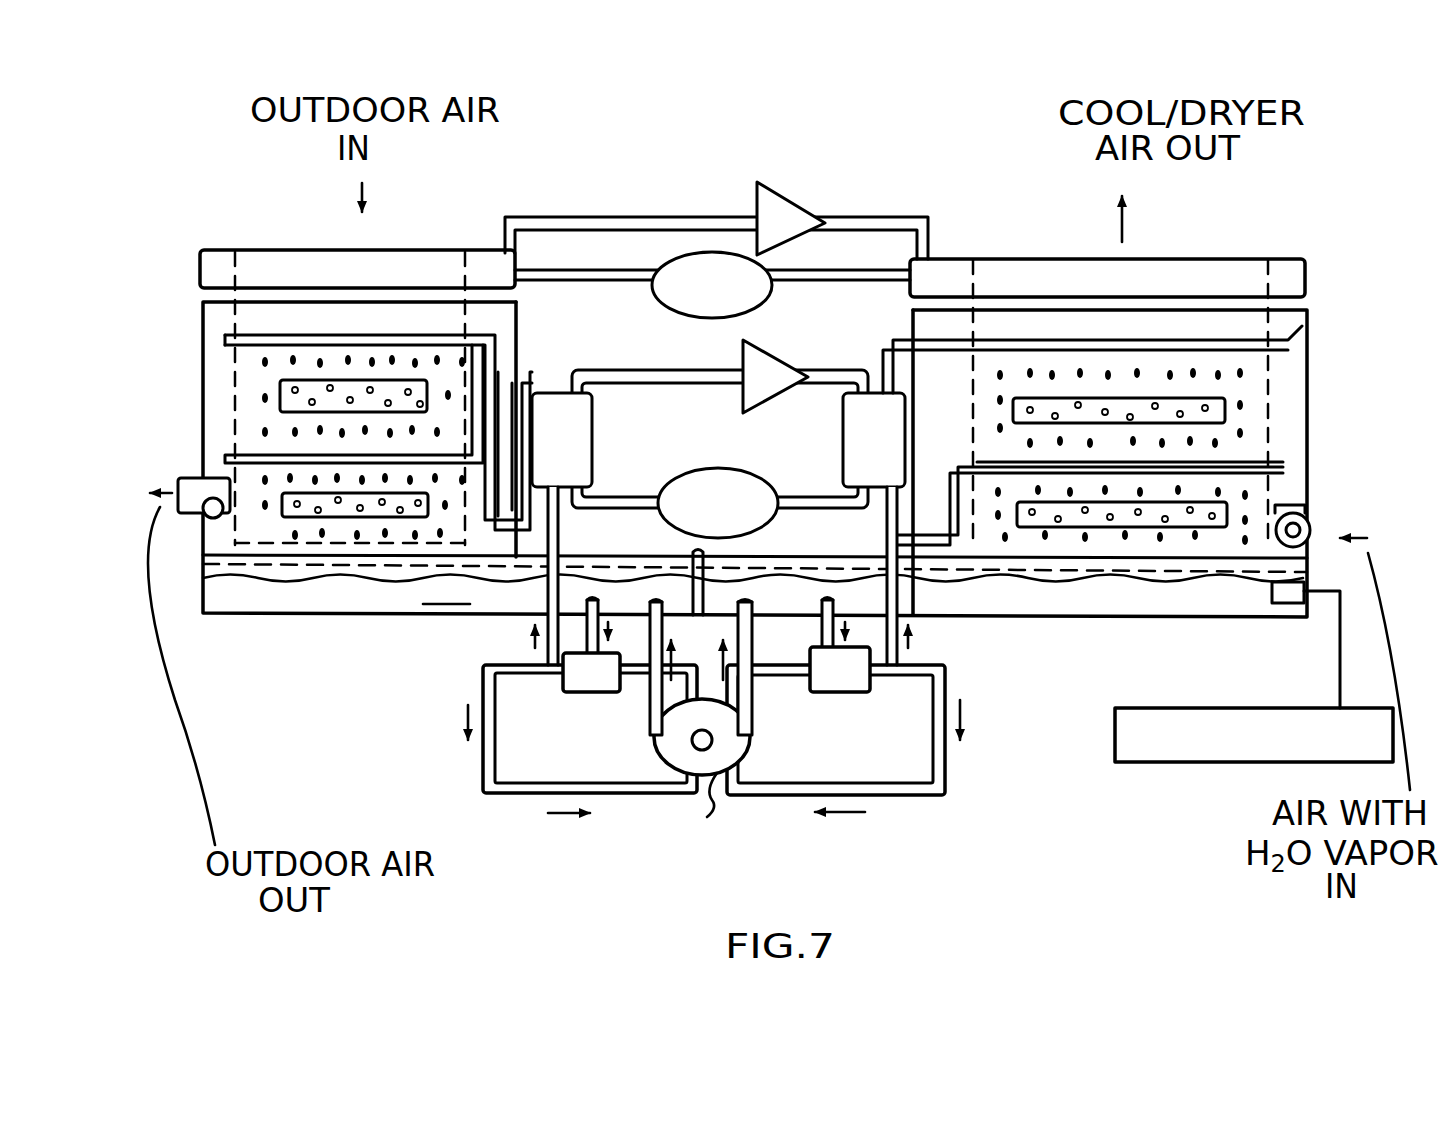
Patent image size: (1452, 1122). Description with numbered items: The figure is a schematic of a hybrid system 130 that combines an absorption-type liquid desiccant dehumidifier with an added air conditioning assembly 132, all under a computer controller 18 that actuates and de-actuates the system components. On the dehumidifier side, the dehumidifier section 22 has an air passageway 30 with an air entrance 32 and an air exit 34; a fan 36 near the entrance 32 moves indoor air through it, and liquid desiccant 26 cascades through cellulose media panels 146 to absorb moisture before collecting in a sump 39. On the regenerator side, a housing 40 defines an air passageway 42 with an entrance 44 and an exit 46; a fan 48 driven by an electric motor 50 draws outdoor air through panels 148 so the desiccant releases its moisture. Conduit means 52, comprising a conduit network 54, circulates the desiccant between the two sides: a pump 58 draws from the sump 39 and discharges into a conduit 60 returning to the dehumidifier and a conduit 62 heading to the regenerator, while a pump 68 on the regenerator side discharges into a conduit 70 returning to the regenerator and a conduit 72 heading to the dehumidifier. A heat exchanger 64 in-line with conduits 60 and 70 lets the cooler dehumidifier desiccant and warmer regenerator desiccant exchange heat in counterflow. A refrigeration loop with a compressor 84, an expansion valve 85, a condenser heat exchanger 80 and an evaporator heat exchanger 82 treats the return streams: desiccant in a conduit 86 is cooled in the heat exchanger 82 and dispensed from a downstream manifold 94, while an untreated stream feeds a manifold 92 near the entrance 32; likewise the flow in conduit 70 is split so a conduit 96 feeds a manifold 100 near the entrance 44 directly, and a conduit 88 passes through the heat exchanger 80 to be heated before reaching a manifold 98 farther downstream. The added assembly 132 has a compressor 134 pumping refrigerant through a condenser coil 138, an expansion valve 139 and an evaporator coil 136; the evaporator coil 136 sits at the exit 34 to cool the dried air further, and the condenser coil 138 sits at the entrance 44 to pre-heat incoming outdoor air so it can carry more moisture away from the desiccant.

The computer controller 18 is at (1232, 765).
The dehumidifier section 22 is at (1305, 360).
The liquid desiccant 26 is at (1105, 597).
The air passageway 30 is at (1265, 393).
The air entrance 32 is at (1308, 512).
The air exit 34 is at (913, 312).
The fan 36 is at (1288, 546).
The collection sump 39 is at (1185, 598).
The housing 40 is at (240, 326).
The air passageway 42 is at (248, 388).
The air entrance 44 is at (462, 320).
The air exit 46 is at (178, 490).
The fan 48 is at (192, 520).
The electric motor 50 is at (185, 515).
The conduit means 52 is at (438, 795).
The conduit network 54 is at (908, 819).
The pump 58 is at (840, 695).
The conduit 60 is at (898, 600).
The conduit 62 is at (650, 703).
The heat exchanger 64 is at (702, 776).
The pump 68 is at (580, 695).
The conduit 70 is at (540, 596).
The conduit 72 is at (483, 690).
The heat exchanger 80 is at (593, 428).
The heat exchanger 82 is at (843, 450).
The compressor 84 is at (710, 468).
The expansion valve 85 is at (808, 355).
The conduit 86 is at (870, 523).
The conduit 88 is at (507, 353).
The manifold 92 is at (1277, 470).
The manifold 94 is at (1322, 292).
The conduit 96 is at (425, 557).
The manifold 98 is at (230, 447).
The manifold 100 is at (205, 318).
The hybrid system 130 is at (890, 104).
The air conditioning assembly 132 is at (630, 170).
The compressor 134 is at (728, 322).
The evaporator coil 136 is at (1306, 262).
The condenser coil 138 is at (185, 250).
The expansion valve 139 is at (793, 200).
The cellulose media panels 146 is at (1025, 388).
The cellulose panels 148 is at (305, 390).